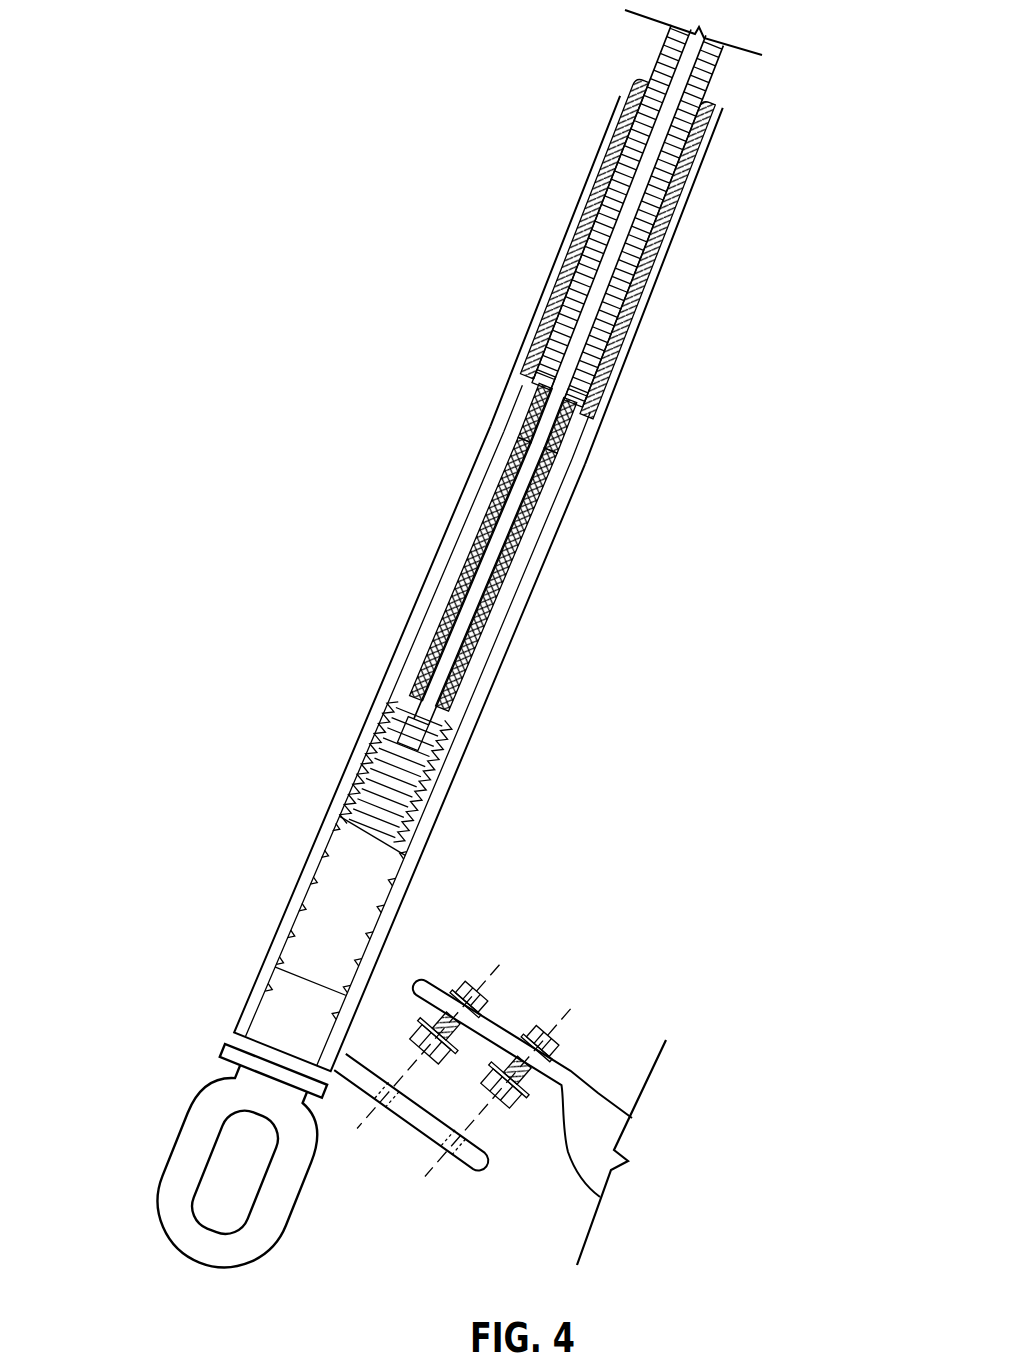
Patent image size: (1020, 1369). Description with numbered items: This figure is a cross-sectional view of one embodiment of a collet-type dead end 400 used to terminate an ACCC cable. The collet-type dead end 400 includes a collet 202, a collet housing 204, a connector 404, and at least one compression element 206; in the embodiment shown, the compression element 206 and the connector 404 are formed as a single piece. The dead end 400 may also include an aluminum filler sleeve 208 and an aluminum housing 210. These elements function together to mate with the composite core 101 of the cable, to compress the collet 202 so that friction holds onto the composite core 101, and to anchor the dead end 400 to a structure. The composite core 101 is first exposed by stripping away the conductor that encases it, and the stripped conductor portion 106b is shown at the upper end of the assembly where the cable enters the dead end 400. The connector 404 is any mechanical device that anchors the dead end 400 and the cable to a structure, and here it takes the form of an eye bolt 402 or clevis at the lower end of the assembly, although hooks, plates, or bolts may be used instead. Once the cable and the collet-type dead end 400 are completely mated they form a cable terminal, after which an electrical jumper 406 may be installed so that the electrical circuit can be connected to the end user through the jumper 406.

The collet-type dead end 400 is at (287, 476).
The threaded rod 106b is at (716, 66).
The composite core 101 is at (448, 650).
The aluminum filler sleeve 208 is at (578, 252).
The aluminum housing 210 is at (540, 300).
The collet 202 is at (470, 672).
The collet housing 204 is at (512, 571).
The compression element 206 is at (405, 786).
The connector 404 is at (183, 1109).
The eye bolt 402 is at (192, 1167).
The electrical jumper 406 is at (410, 1132).